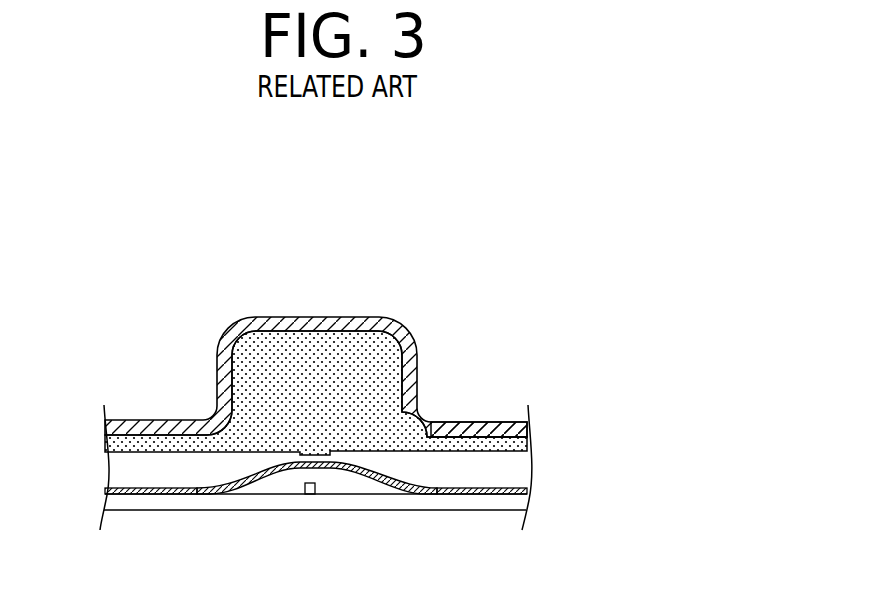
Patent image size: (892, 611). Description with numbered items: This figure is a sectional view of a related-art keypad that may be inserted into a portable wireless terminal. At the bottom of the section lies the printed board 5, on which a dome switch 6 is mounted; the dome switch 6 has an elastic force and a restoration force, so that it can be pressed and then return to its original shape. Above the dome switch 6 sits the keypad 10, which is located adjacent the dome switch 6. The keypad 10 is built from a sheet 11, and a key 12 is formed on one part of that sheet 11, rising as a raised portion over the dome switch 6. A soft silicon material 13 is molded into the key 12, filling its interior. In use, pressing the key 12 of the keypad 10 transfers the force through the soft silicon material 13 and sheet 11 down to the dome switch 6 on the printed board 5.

The printed board 5 is at (477, 497).
The dome switch 6 is at (346, 478).
The keypad 10 is at (344, 356).
The sheet 11 is at (488, 424).
The key 12 is at (230, 342).
The soft silicon material 13 is at (387, 385).